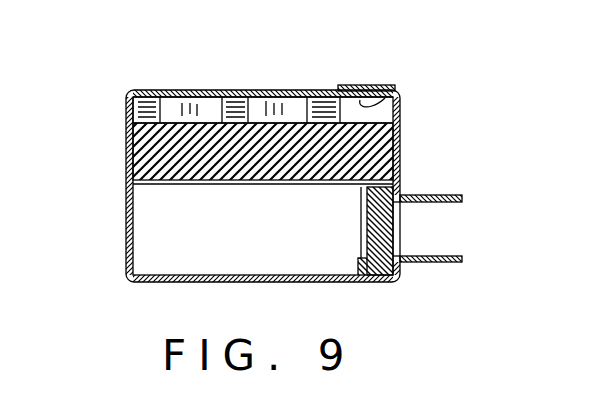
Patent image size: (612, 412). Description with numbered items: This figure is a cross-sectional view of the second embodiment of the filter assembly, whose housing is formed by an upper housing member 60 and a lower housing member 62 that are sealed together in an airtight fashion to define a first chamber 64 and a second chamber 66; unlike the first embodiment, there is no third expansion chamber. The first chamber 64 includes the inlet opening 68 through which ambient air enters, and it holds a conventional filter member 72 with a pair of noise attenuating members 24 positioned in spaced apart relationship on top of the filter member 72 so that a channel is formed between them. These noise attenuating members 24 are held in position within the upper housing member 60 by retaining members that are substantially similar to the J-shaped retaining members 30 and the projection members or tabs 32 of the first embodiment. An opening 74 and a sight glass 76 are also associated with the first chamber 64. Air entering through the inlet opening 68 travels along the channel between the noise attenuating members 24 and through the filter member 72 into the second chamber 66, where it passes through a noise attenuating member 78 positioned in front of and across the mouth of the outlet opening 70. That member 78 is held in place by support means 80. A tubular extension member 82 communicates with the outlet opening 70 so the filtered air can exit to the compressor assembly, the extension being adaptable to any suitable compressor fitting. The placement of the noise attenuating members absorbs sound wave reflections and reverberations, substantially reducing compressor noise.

The noise attenuating members 24 is at (183, 97).
The J-shaped retaining members 30 is at (318, 92).
The projection members or tabs 32 is at (140, 97).
The upper housing member 60 is at (400, 148).
The lower housing member 62 is at (157, 282).
The first chamber 64 is at (293, 97).
The second chamber 66 is at (243, 248).
The inlet opening 68 is at (130, 113).
The outlet opening 70 is at (397, 228).
The filter member 72 is at (168, 155).
The opening 74 is at (380, 103).
The sight glass 76 is at (360, 86).
The noise attenuating member 78 is at (388, 282).
The support means 80 is at (367, 232).
The tubular extension member 82 is at (452, 262).